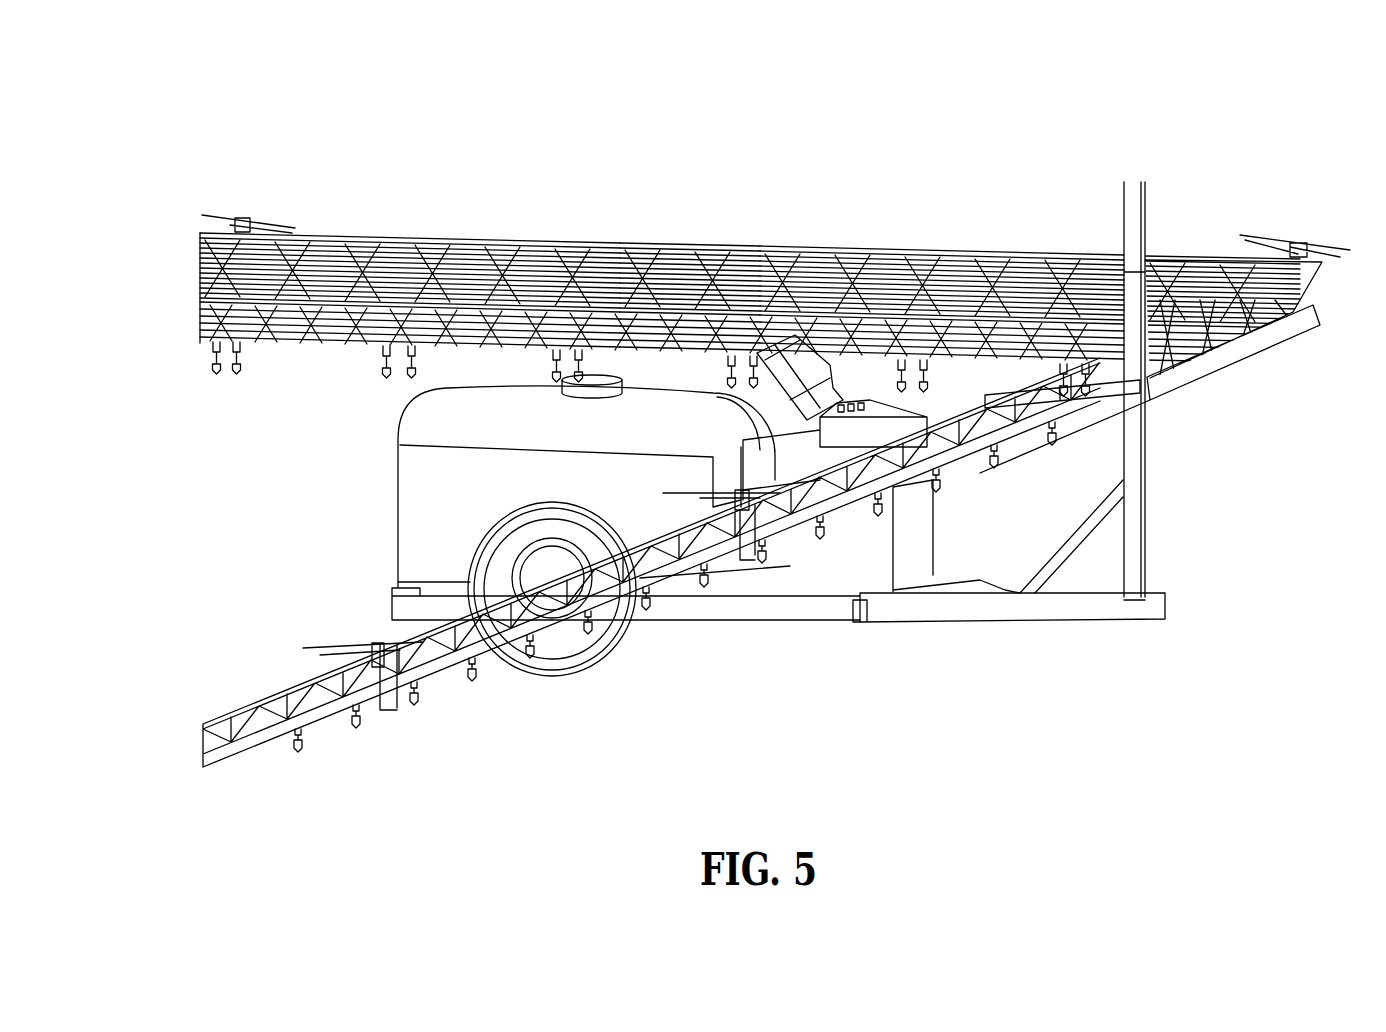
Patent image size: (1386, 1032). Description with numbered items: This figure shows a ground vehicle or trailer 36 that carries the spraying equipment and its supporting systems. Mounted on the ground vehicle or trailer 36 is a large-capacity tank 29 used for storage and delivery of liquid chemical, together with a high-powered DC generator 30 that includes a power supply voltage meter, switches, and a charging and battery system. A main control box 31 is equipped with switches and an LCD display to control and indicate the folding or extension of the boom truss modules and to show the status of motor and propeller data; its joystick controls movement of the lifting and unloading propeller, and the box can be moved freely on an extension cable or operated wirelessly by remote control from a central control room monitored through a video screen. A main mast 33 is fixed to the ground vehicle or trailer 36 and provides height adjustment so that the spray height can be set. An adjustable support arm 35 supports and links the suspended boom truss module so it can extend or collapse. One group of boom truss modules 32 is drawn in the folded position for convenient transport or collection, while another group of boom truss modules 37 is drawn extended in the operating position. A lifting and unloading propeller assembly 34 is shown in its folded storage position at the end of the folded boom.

The large-capacity tank 29 is at (450, 407).
The high-powered DC generator 30 is at (553, 247).
The main control box 31 is at (690, 247).
The group of boom truss modules in folded position 32 is at (820, 252).
The main mast 33 is at (1130, 235).
The lifting and unloading propeller assembly 34 is at (1300, 247).
The adjustable support arm 35 is at (1108, 402).
The ground vehicle or trailer 36 is at (1055, 607).
The group of boom truss modules extended in operating position 37 is at (307, 680).